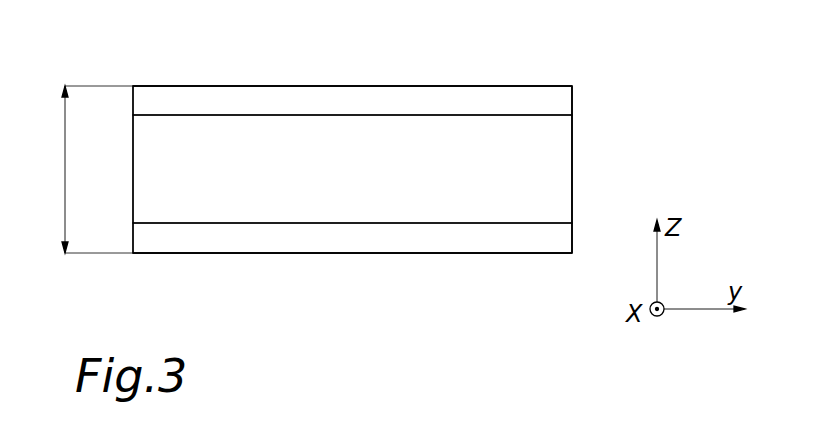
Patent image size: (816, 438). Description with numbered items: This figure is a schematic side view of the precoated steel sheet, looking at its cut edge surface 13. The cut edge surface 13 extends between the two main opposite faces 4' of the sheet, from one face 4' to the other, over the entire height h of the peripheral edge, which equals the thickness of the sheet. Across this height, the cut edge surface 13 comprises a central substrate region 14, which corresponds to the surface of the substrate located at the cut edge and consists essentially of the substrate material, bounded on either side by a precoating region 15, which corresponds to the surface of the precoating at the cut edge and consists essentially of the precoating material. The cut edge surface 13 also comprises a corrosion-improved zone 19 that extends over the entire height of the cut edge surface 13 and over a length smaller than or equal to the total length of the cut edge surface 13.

The cut edge surface 13 is at (582, 97).
The substrate region 14 is at (352, 169).
The precoating region 15 is at (352, 169).
The corrosion-improved zone 19 is at (588, 170).
The main opposite faces 4' is at (352, 171).
The height of the peripheral edge h is at (85, 169).